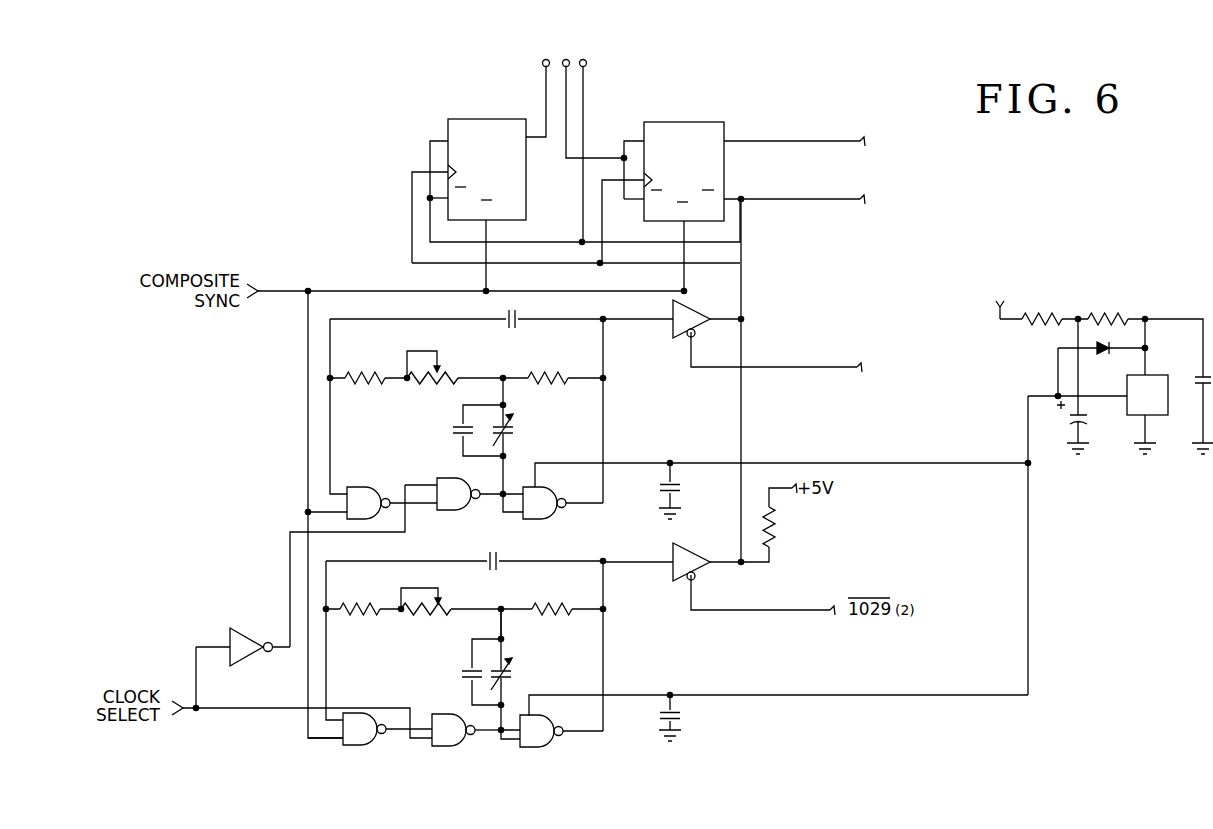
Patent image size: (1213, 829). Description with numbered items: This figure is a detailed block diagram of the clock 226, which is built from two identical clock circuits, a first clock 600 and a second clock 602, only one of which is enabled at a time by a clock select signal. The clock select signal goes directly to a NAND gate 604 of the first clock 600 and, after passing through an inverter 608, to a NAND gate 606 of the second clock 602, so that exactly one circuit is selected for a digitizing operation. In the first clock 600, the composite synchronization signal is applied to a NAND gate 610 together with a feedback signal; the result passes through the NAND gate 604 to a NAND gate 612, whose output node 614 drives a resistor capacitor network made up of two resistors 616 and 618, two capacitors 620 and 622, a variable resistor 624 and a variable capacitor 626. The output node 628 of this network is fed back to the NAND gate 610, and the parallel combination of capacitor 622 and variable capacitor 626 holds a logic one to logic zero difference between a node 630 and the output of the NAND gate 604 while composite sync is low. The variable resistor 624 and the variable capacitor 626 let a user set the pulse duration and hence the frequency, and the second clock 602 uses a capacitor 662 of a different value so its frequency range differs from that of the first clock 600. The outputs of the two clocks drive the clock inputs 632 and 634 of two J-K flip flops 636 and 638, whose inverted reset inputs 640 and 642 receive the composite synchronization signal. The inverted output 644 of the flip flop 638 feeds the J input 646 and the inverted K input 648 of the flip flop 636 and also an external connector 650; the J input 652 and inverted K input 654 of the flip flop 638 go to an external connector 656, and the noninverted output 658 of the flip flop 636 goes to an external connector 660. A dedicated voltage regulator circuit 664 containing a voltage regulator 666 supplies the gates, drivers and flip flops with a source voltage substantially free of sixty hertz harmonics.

The clock 226 is at (323, 168).
The first clock 600 is at (298, 740).
The second clock 602 is at (288, 416).
The NAND gate 604 is at (452, 717).
The NAND gate 606 is at (452, 511).
The inverter 608 is at (247, 628).
The NAND gate 610 is at (362, 716).
The NAND gate 612 is at (540, 720).
The output node 614 is at (606, 634).
The resistor 616 is at (542, 605).
The resistor 618 is at (362, 605).
The capacitor 620 is at (508, 552).
The capacitor 622 is at (470, 668).
The variable resistor 624 is at (447, 605).
The variable capacitor 626 is at (510, 678).
The output node 628 is at (328, 660).
The node 630 is at (507, 622).
The clock input 632 is at (448, 170).
The clock input 634 is at (644, 178).
The J-K flip flop 636 is at (494, 118).
The J-K flip flop 638 is at (697, 121).
The inverted reset input 640 is at (488, 221).
The inverted reset input 642 is at (690, 224).
The inverted output 644 is at (724, 195).
The J input 646 is at (448, 136).
The inverted K input 648 is at (448, 200).
The external connector 650 is at (585, 60).
The J input 652 is at (644, 137).
The inverted K input 654 is at (644, 202).
The external connector 656 is at (567, 60).
The noninverted output 658 is at (530, 142).
The external connector 660 is at (546, 60).
The capacitor 662 is at (518, 327).
The voltage regulator circuit 664 is at (1154, 466).
The voltage regulator 666 is at (1157, 375).